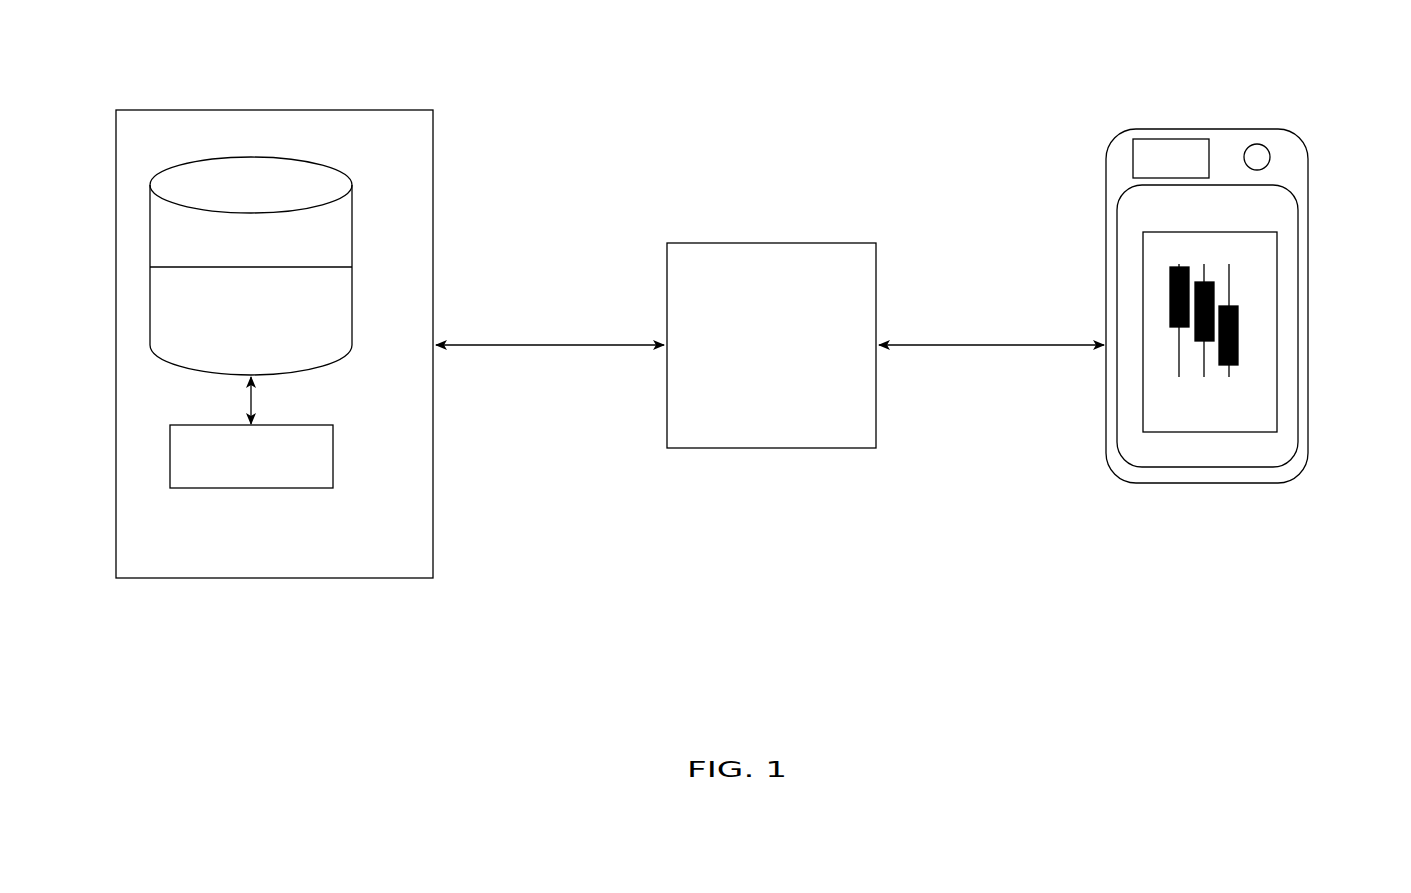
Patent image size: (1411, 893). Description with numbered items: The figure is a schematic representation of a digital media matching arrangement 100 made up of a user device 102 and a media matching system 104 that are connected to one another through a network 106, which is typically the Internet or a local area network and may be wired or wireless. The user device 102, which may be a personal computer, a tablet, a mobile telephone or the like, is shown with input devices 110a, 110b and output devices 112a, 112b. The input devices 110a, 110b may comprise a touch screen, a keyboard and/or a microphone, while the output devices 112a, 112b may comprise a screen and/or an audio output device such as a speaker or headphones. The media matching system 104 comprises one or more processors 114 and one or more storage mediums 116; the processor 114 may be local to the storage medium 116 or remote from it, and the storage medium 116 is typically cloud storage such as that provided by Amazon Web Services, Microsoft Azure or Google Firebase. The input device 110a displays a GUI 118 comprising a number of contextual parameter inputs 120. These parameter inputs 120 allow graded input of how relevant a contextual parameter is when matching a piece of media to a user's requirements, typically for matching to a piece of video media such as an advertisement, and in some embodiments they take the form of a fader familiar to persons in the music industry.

The digital media matching arrangement 100 is at (587, 163).
The user device 102 is at (1191, 272).
The media matching system 104 is at (215, 600).
The network 106 is at (772, 458).
The input device 110a is at (1298, 360).
The input device 110b is at (1257, 144).
The output device 112a is at (1118, 285).
The output device 112b is at (1170, 139).
The processor 114 is at (170, 458).
The storage medium 116 is at (250, 157).
The GUI 118 is at (1277, 308).
The contextual parameter inputs 120 is at (1177, 378).